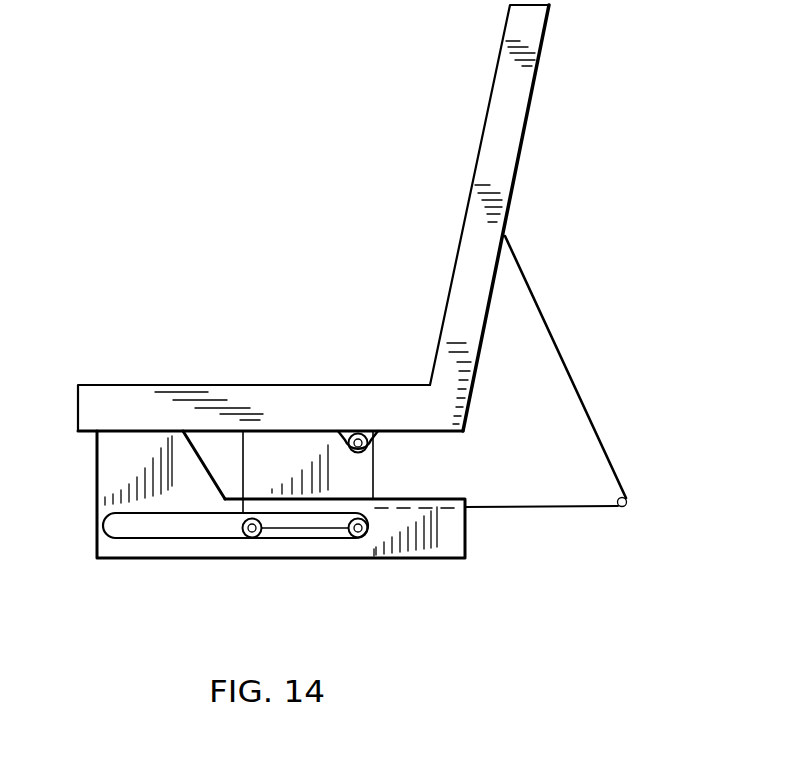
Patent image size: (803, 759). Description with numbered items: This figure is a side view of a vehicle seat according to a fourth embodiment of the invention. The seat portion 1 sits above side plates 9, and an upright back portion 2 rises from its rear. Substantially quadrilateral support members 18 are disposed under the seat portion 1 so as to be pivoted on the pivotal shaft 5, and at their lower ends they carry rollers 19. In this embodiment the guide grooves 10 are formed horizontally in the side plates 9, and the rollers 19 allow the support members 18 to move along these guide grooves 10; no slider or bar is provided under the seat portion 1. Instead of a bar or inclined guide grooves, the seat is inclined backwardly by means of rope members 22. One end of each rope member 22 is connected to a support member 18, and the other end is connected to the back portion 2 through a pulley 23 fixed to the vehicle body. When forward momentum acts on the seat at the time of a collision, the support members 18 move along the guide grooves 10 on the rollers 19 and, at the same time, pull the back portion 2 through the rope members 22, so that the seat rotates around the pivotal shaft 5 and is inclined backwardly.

The seat portion 1 is at (120, 400).
The back portion 2 is at (498, 143).
The pivotal shaft 5 is at (358, 437).
The side plates 9 is at (447, 538).
The guide grooves 10 is at (145, 537).
The support members 18 is at (282, 467).
The rollers 19 is at (255, 537).
The rope members 22 is at (562, 355).
The pulleys 23 is at (613, 508).